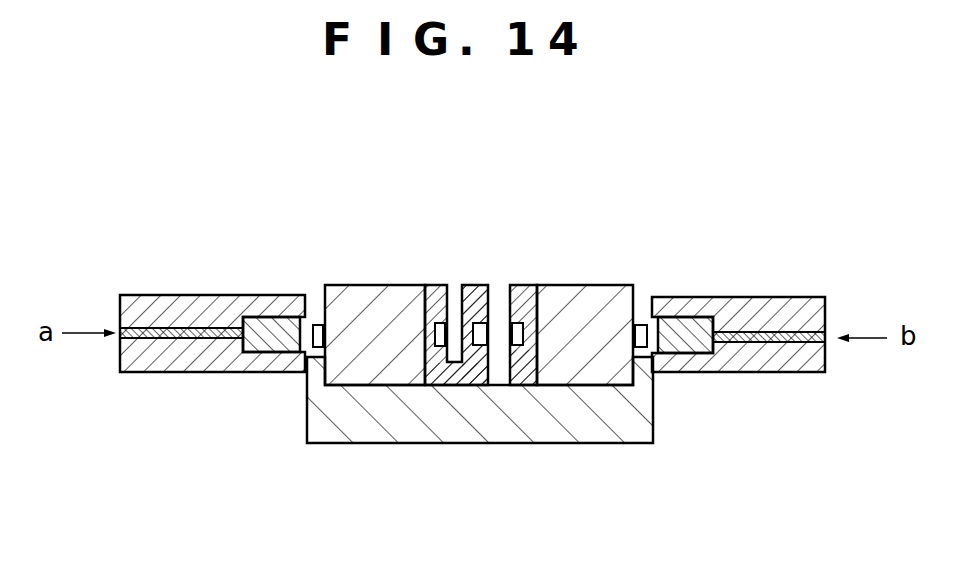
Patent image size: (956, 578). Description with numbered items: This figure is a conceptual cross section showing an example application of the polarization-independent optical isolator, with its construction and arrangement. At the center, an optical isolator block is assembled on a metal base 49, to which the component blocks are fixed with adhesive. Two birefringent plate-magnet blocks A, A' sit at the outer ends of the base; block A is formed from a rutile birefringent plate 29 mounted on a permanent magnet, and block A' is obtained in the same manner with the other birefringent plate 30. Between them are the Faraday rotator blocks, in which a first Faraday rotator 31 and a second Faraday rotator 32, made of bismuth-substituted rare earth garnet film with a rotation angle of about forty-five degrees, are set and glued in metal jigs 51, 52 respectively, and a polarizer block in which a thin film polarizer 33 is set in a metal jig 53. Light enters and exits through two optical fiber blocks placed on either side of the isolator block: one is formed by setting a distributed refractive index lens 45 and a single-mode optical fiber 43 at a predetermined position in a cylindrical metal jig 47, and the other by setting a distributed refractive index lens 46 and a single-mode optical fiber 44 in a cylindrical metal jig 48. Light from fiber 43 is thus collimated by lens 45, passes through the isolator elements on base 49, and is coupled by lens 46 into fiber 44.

The birefringent plate 29 is at (300, 362).
The birefringent plate 30 is at (644, 324).
The Faraday rotator 31 is at (455, 360).
The Faraday rotator 32 is at (527, 295).
The polarizer 33 is at (500, 320).
The single-mode optical fiber 43 is at (117, 332).
The single-mode optical fiber 44 is at (830, 342).
The distributed refractive index lens 45 is at (272, 327).
The distributed refractive index lens 46 is at (690, 360).
The cylindrical metal jig 47 is at (175, 303).
The cylindrical metal jig 48 is at (780, 365).
The metal base 49 is at (475, 433).
The metal jig 51 is at (435, 378).
The metal jig 52 is at (523, 372).
The metal jig 53 is at (475, 290).
The birefringent-magnet block A is at (375, 394).
The birefringent plate-magnet block A' is at (585, 394).